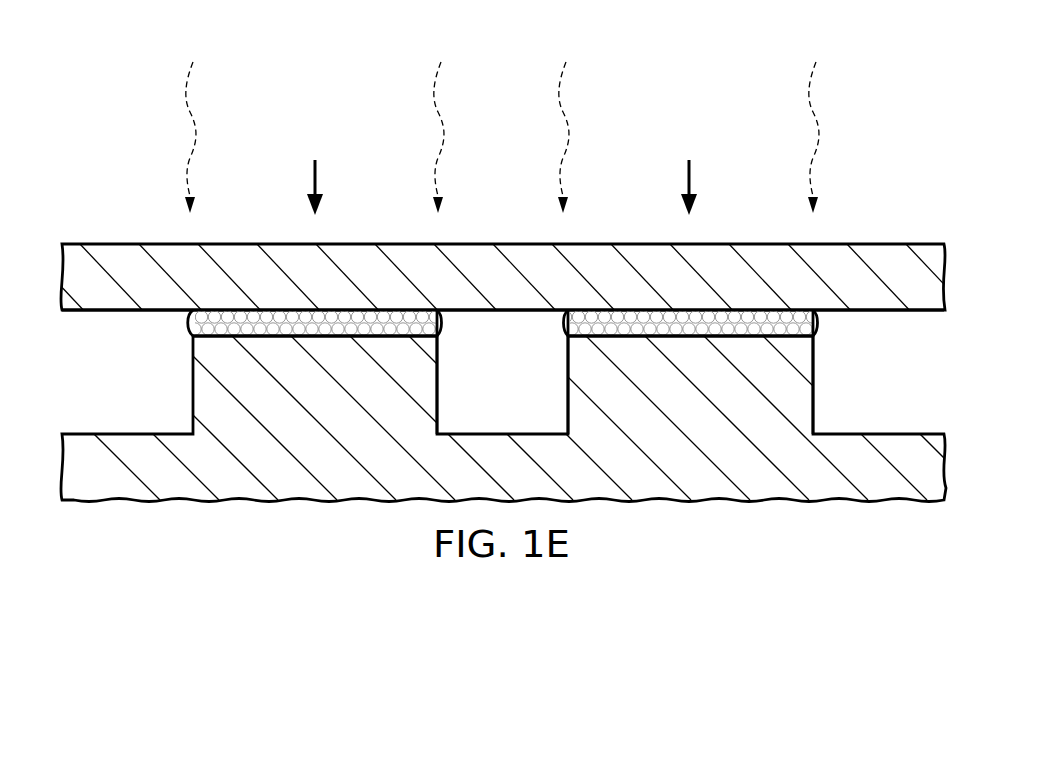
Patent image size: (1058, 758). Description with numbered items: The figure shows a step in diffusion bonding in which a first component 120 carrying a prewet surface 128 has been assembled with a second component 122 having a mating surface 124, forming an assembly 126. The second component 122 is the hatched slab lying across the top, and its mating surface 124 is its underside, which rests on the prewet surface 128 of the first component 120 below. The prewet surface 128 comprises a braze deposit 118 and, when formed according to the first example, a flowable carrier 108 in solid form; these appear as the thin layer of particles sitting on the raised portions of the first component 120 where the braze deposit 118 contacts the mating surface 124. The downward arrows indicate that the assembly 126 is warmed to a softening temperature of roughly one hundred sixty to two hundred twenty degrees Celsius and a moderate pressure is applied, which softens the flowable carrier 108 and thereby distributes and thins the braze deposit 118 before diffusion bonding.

The flowable carrier 108 is at (455, 328).
The braze deposit 118 is at (836, 330).
The first component 120 is at (243, 497).
The second component 122 is at (237, 243).
The mating surface 124 is at (75, 313).
The assembly 126 is at (151, 160).
The prewet surface 128 is at (168, 330).